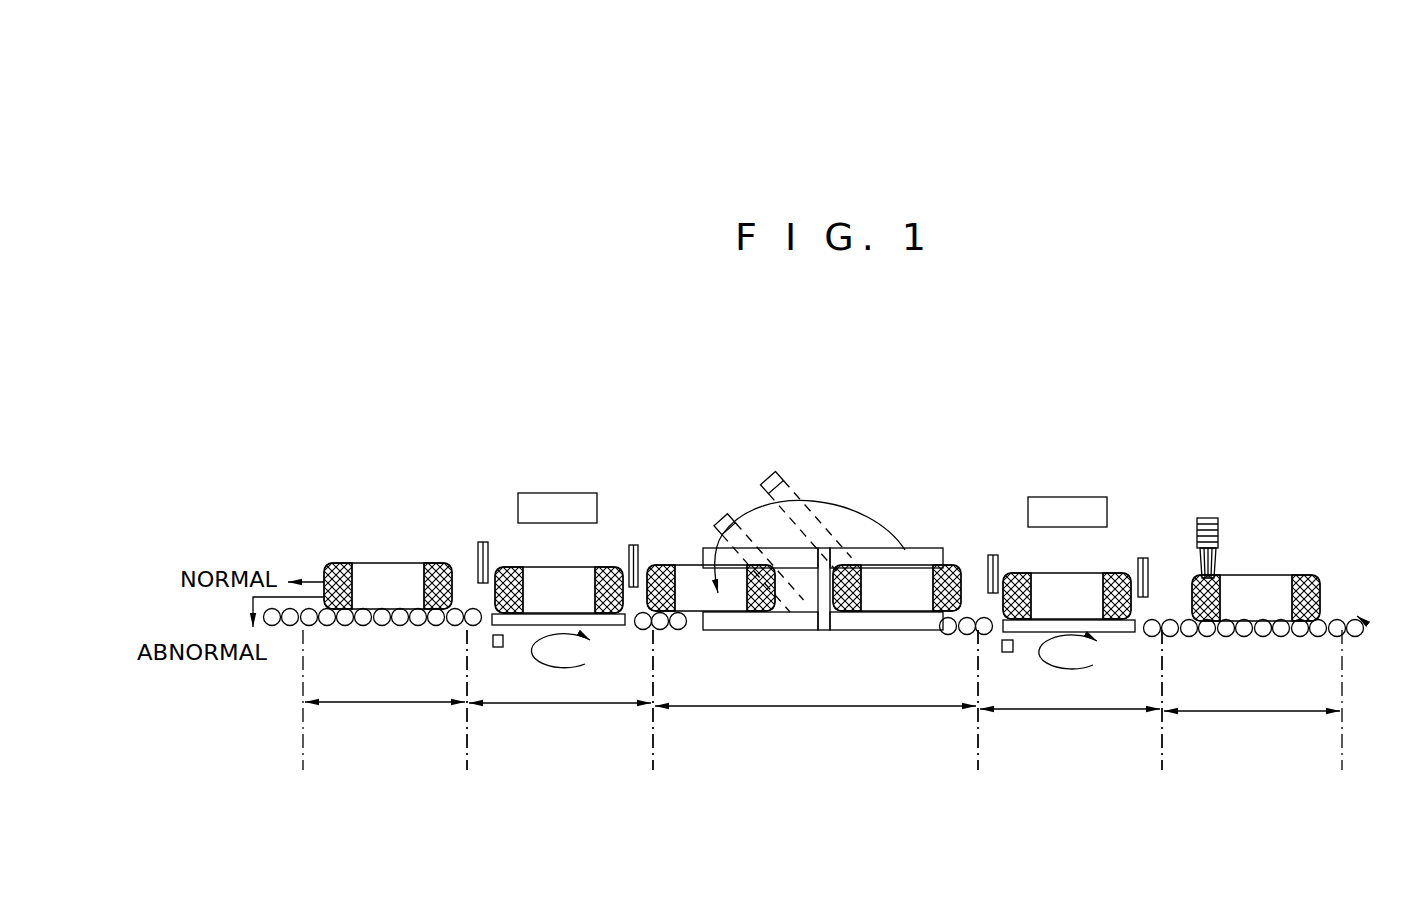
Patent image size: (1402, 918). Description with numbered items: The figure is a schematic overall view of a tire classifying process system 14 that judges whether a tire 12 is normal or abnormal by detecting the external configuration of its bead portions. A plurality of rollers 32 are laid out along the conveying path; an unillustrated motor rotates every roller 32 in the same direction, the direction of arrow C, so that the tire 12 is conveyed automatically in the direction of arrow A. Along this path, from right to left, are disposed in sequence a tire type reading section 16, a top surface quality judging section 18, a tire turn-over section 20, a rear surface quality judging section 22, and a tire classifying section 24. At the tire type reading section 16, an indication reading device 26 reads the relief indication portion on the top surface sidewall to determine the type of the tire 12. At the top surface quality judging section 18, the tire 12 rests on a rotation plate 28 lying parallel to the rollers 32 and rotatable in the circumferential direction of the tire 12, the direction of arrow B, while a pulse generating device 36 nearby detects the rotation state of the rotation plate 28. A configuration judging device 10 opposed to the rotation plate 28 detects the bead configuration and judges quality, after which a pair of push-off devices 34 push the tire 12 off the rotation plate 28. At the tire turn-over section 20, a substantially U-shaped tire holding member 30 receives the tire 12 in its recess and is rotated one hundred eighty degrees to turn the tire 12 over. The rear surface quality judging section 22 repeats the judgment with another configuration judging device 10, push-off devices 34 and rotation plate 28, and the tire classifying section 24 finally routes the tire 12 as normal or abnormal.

The configuration judging device 10 is at (578, 500).
The tire 12 is at (407, 562).
The tire classifying process system 14 is at (1200, 457).
The tire type reading section 16 is at (1250, 715).
The top surface quality judging section 18 is at (1070, 714).
The tire turn-over section 20 is at (803, 711).
The rear surface quality judging section 22 is at (570, 708).
The tire classifying section 24 is at (388, 705).
The indication reading device 26 is at (1218, 523).
The rotation plate 28 is at (615, 627).
The tire holding member 30 is at (786, 481).
The rollers 32 is at (272, 627).
The push-off devices 34 is at (633, 545).
The pulse generating device 36 is at (496, 650).
The conveying direction arrow A is at (1340, 600).
The rotation direction arrow B is at (530, 664).
The roller rotation direction arrow C is at (1360, 631).